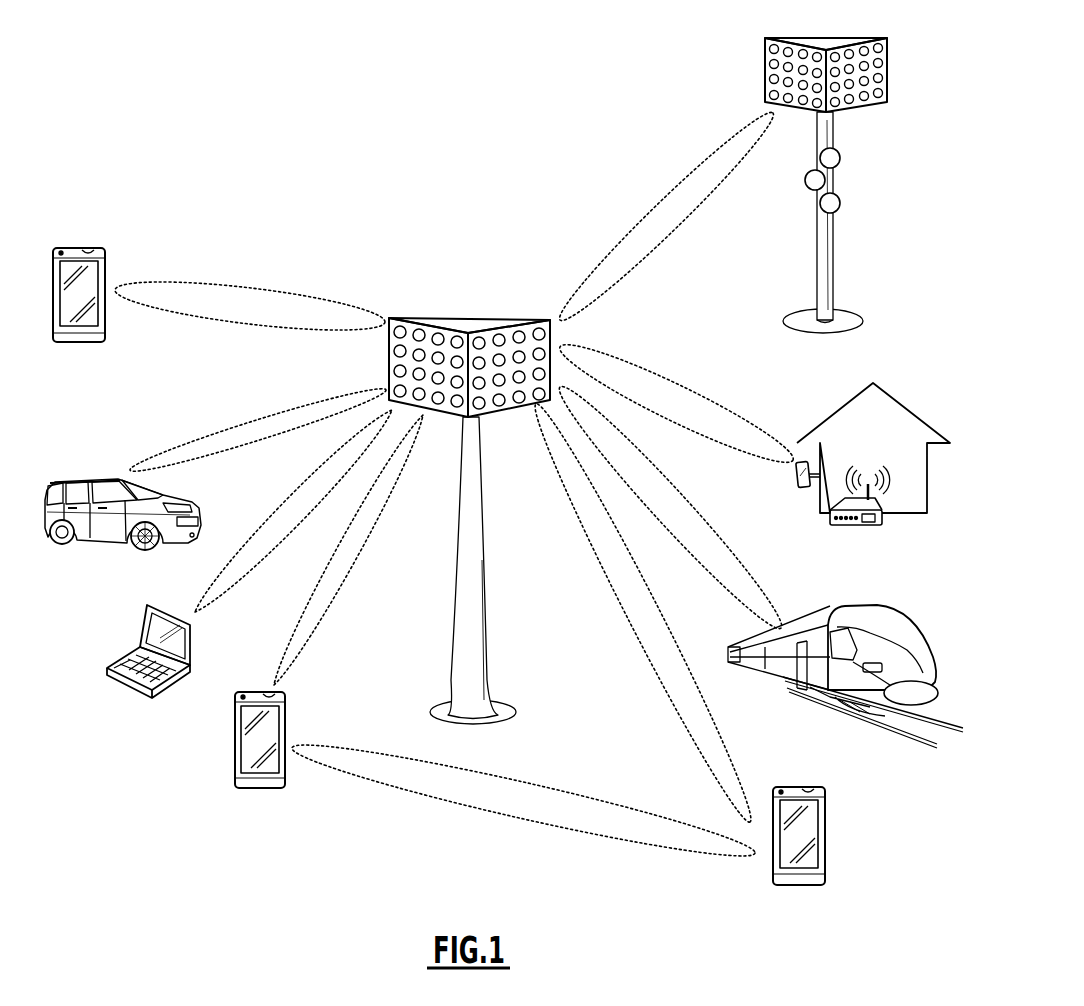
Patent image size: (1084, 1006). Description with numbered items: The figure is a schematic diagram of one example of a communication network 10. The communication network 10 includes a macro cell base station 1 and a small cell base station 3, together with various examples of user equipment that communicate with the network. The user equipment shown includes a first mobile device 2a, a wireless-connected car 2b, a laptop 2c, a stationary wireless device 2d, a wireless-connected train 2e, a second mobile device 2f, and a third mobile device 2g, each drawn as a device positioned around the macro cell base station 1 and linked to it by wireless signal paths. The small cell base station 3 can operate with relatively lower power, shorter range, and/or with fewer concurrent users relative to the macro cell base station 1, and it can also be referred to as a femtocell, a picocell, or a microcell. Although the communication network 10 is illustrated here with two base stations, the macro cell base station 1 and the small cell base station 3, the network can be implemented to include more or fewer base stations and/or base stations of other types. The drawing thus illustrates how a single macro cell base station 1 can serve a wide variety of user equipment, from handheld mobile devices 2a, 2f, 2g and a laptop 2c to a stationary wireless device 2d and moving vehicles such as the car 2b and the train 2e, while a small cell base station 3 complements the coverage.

The communication network 10 is at (140, 136).
The macro cell base station 1 is at (450, 662).
The small cell base station 3 is at (822, 305).
The first mobile device 2a is at (108, 264).
The wireless-connected car 2b is at (93, 524).
The laptop 2c is at (140, 628).
The stationary wireless device 2d is at (803, 490).
The wireless-connected train 2e is at (903, 627).
The second mobile device 2f is at (828, 818).
The third mobile device 2g is at (287, 716).